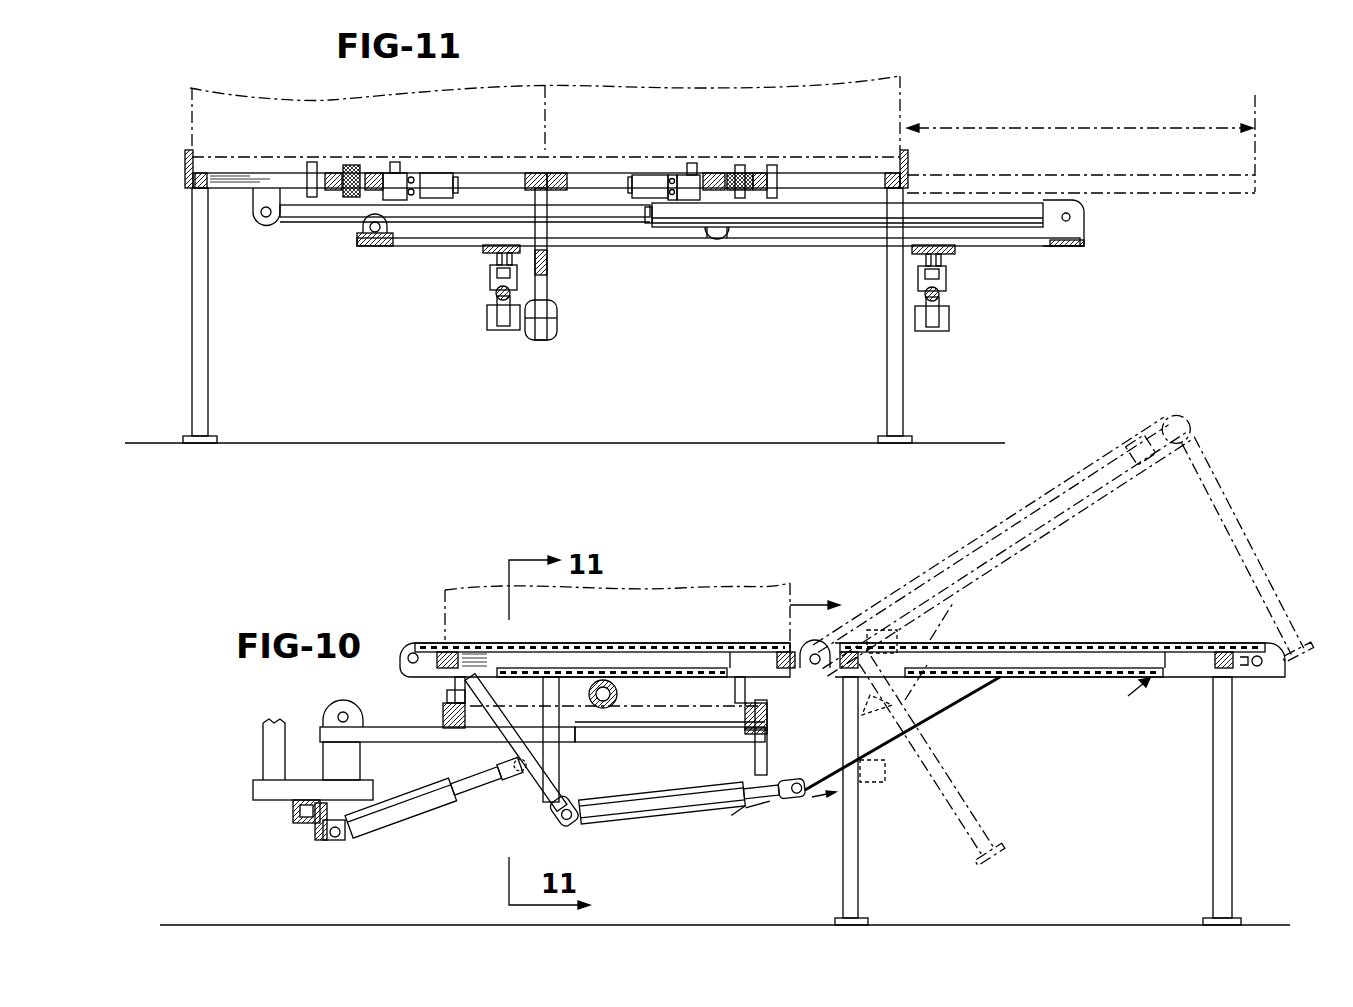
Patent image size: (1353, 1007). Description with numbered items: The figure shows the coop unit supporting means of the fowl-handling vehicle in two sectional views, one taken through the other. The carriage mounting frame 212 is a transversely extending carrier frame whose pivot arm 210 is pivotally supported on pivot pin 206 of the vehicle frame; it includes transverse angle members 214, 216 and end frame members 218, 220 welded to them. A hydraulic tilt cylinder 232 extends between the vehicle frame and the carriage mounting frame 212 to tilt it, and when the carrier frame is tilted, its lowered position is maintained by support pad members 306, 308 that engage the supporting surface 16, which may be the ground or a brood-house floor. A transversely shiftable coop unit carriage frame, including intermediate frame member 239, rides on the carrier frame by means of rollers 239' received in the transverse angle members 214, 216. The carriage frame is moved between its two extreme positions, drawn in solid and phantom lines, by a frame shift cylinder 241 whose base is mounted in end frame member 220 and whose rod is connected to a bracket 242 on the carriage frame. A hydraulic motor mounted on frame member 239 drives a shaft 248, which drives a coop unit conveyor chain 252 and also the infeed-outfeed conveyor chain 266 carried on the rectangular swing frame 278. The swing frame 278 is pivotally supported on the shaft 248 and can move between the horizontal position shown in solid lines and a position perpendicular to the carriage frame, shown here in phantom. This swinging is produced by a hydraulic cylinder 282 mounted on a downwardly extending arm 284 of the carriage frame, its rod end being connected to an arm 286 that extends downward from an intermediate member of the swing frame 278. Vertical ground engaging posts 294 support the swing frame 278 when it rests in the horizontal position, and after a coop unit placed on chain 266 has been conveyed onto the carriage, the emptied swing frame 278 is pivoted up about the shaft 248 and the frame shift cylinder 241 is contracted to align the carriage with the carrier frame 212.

In FIG. 11, the supporting surface 16 is at (696, 441).
In FIG. 10, the pivot pin 206 is at (328, 717).
In FIG. 10, the pivot arm 210 is at (403, 735).
In FIG. 10, the carriage mounting frame 212 is at (639, 728).
In FIG. 10, the transverse angle member 214 is at (443, 713).
In FIG. 11, the transverse angle member 216 is at (639, 247).
In FIG. 10, the transverse angle member 216 is at (768, 722).
In FIG. 11, the end frame member 218 is at (357, 231).
In FIG. 11, the end frame member 220 is at (1086, 243).
In FIG. 10, the hydraulic tilt cylinder 232 is at (373, 828).
In FIG. 10, the intermediate frame member 239 is at (597, 706).
In FIG. 11, the roller 239' is at (561, 254).
In FIG. 11, the frame shift cylinder 241 is at (780, 228).
In FIG. 10, the frame shift cylinder 241 is at (619, 694).
In FIG. 11, the bracket 242 is at (258, 224).
In FIG. 10, the shaft 248 is at (815, 670).
In FIG. 10, the chain 252 is at (577, 643).
In FIG. 10, the infeed-outfeed conveyor chain 266 is at (1053, 650).
In FIG. 10, the rectangular swing frame 278 is at (1115, 698).
In FIG. 10, the hydraulic cylinder 282 is at (640, 812).
In FIG. 10, the downwardly extending arm 284 is at (548, 791).
In FIG. 10, the arm 286 is at (938, 714).
In FIG. 11, the vertical ground engaging post 294 is at (192, 354).
In FIG. 10, the vertical ground engaging post 294 is at (858, 860).
In FIG. 11, the support pad member 306 is at (487, 326).
In FIG. 11, the support pad member 308 is at (950, 323).